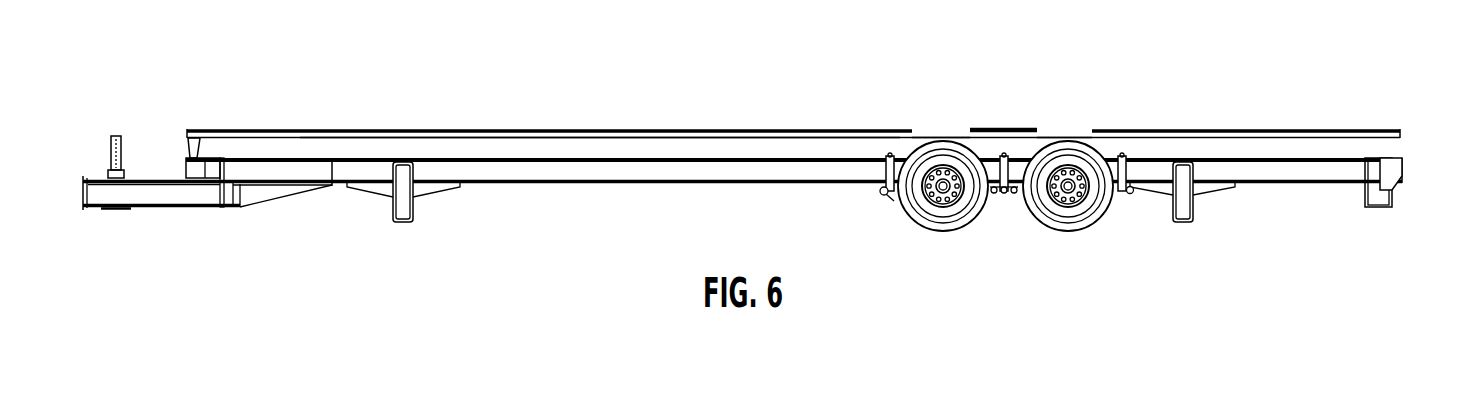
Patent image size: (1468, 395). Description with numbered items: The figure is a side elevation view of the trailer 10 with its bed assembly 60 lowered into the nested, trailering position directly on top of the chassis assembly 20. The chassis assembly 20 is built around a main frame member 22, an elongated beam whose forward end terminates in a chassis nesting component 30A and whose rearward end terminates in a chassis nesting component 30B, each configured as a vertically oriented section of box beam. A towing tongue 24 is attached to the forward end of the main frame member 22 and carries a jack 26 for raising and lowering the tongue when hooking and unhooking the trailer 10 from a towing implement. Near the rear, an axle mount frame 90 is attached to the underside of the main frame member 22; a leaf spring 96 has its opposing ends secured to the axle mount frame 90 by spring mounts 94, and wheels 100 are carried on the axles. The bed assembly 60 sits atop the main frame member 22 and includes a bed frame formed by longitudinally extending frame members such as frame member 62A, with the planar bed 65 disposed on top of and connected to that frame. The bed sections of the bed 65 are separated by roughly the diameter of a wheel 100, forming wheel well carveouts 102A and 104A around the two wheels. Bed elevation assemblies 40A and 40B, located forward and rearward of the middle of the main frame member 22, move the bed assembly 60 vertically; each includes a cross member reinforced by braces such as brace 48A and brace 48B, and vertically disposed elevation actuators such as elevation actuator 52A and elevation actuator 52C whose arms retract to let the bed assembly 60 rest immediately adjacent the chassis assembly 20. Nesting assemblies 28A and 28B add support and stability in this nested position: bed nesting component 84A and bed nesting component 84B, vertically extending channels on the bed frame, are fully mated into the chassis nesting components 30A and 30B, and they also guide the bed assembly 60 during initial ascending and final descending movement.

The trailer 10 is at (768, 168).
The chassis assembly 20 is at (768, 179).
The main frame member 22 is at (643, 176).
The towing tongue 24 is at (148, 196).
The jack 26 is at (117, 135).
The bed nesting assembly 28A is at (185, 164).
The bed nesting assembly 28B is at (1437, 146).
The chassis nesting component 30A is at (212, 178).
The chassis nesting component 30B is at (1380, 200).
The bed elevation assembly 40A is at (390, 200).
The bed elevation assembly 40B is at (1197, 190).
The brace 48A is at (445, 186).
The brace 48B is at (1137, 188).
The elevation actuator 52A is at (405, 205).
The elevation actuator 52C is at (1182, 204).
The bed assembly 60 is at (567, 126).
The longitudinally extending frame member 62A is at (729, 147).
The bed 65 is at (1135, 130).
The bed nesting component 84A is at (197, 168).
The bed nesting component 84B is at (1388, 168).
The axle mount frame 90 is at (893, 170).
The spring mount 94 is at (890, 195).
The spring 96 is at (994, 197).
The wheel 100 is at (943, 230).
The wheel well carveout 102A is at (945, 138).
The wheel well carveout 104A is at (1065, 138).